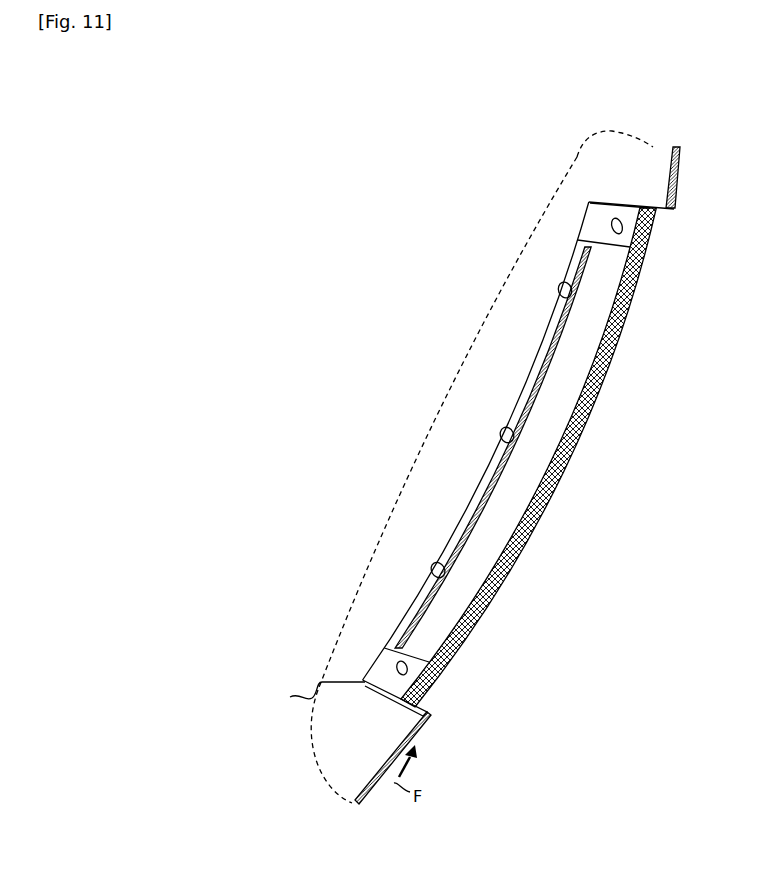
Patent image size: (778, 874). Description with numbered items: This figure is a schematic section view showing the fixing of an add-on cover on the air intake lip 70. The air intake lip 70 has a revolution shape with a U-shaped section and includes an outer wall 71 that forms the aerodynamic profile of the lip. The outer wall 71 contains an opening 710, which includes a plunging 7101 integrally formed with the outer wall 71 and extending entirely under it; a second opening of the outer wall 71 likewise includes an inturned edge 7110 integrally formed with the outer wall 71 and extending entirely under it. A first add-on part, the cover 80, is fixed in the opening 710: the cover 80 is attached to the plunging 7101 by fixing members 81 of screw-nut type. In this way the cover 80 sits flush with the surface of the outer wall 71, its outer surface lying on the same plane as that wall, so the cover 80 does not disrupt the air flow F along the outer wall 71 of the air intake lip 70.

The air intake lip 70 is at (355, 803).
The outer wall 71 is at (428, 725).
The cover 80 is at (468, 628).
The fixing members 81 is at (616, 204).
The opening 710 is at (578, 470).
The plunging 7101 is at (597, 205).
The inturned edge 7110 is at (598, 218).